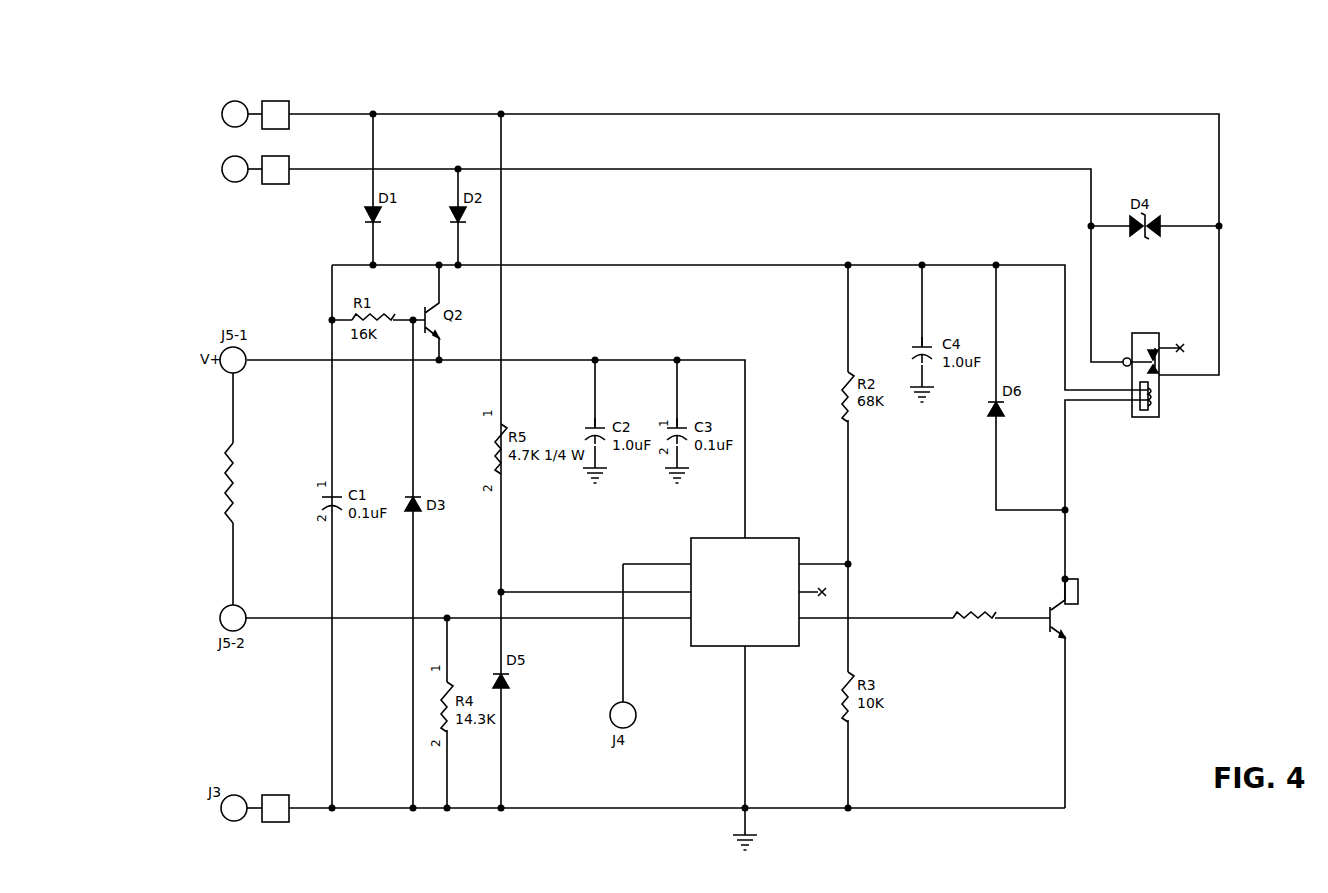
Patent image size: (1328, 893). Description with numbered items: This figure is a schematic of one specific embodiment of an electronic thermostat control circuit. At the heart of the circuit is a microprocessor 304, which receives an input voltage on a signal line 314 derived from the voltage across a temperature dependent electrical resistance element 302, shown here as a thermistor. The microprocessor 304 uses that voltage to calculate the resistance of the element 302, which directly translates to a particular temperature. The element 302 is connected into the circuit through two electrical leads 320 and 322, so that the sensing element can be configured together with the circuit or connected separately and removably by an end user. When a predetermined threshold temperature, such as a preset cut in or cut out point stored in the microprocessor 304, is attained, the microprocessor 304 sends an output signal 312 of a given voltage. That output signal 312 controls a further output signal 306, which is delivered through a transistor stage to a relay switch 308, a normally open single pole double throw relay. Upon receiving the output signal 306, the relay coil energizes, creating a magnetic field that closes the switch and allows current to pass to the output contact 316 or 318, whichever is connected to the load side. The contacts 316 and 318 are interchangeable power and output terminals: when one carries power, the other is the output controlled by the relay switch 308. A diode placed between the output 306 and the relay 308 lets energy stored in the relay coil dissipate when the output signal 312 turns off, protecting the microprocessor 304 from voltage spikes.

The output contact 316 is at (243, 98).
The output contact 318 is at (237, 182).
The electrical lead 320 is at (233, 408).
The temperature dependent electrical resistance element 302 is at (233, 500).
The electrical lead 322 is at (233, 565).
The microprocessor 304 is at (680, 540).
The output signal 312 is at (902, 618).
The output signal 306 is at (1065, 538).
The relay switch 308 is at (1155, 330).
The signal line 314 is at (578, 624).